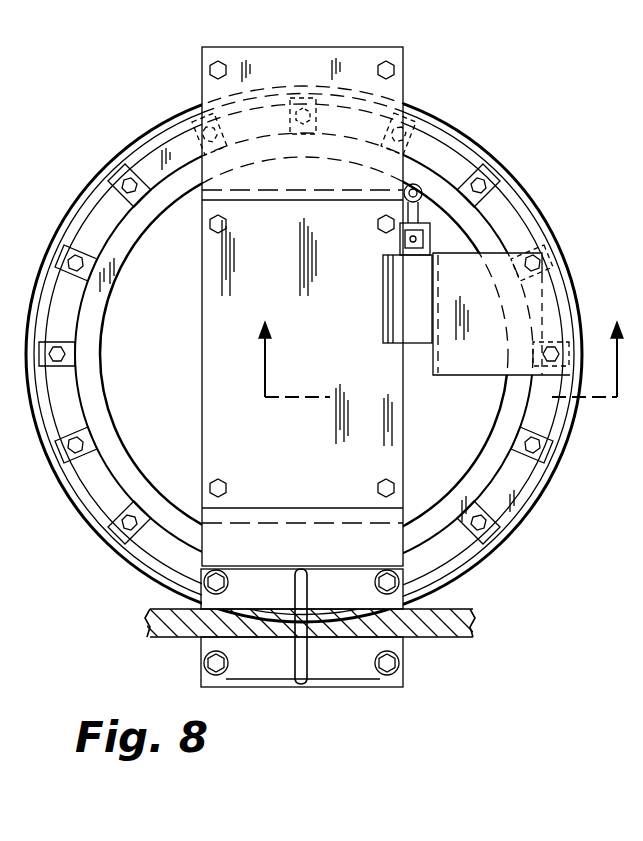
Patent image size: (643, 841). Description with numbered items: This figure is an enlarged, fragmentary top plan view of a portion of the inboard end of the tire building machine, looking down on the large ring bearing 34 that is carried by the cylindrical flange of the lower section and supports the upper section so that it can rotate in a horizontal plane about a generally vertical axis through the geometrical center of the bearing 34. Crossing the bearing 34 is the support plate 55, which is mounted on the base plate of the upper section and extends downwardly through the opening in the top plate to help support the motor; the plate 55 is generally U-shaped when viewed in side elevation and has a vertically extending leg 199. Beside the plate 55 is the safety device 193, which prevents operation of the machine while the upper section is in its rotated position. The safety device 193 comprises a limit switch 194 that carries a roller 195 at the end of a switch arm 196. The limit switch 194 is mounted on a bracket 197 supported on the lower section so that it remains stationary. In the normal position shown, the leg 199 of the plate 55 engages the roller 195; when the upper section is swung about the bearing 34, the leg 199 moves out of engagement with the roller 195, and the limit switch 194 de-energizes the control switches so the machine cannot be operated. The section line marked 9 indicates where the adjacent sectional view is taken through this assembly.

The ring bearing 34 is at (155, 140).
The support plate 55 is at (393, 436).
The safety device 193 is at (418, 184).
The limit switch 194 is at (400, 298).
The roller 195 is at (300, 127).
The switch arm 196 is at (467, 168).
The bracket 197 is at (485, 326).
The vertically extending leg 199 is at (320, 172).
The section line 9- 9 is at (440, 349).